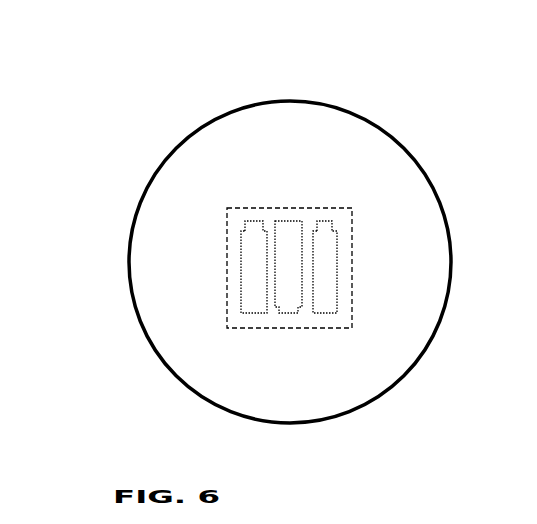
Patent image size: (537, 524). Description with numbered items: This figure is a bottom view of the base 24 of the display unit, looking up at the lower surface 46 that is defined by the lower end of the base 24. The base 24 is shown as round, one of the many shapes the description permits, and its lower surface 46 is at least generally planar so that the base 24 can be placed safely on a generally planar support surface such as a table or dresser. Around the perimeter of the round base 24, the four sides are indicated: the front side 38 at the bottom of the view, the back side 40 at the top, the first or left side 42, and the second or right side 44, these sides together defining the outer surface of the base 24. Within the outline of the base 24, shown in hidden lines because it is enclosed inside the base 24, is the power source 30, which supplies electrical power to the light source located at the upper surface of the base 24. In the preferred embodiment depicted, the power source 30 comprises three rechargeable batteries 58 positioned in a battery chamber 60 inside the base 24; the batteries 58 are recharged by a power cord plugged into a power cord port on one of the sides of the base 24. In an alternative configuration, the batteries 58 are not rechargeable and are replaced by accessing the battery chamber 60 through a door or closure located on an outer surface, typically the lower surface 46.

The base 24 is at (536, 23).
The power source 30 is at (203, 208).
The front side 38 is at (293, 436).
The back side 40 is at (297, 86).
The first or left side 42 is at (110, 263).
The second or right side 44 is at (468, 263).
The lower surface 46 is at (253, 144).
The rechargeable batteries 58 is at (322, 277).
The battery chamber 60 is at (321, 222).